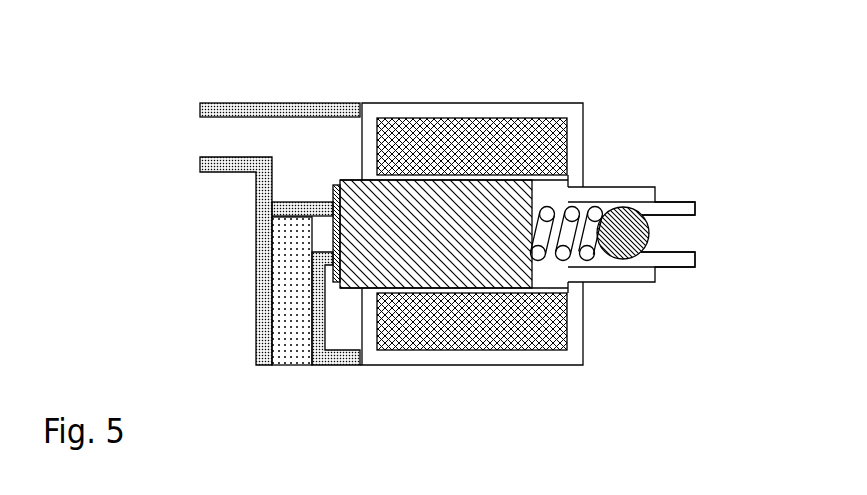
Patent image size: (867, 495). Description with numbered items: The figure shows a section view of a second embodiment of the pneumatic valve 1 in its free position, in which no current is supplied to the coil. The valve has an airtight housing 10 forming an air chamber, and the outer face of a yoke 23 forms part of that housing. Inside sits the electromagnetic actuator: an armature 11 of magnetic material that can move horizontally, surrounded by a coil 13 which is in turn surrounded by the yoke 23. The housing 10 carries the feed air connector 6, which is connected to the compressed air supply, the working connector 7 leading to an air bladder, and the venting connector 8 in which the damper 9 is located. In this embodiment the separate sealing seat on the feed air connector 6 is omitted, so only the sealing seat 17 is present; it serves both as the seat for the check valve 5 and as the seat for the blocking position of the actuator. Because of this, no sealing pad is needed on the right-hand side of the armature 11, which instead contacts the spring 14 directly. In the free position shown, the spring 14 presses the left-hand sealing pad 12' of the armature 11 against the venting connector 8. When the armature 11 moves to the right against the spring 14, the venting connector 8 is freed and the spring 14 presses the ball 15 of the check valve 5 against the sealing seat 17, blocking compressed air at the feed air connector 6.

The pneumatic valve 1 is at (605, 72).
The check valve 5 is at (597, 262).
The feed air connector 6 is at (693, 237).
The working connector 7 is at (207, 140).
The venting connector 8 is at (318, 227).
The damper 9 is at (290, 350).
The housing 10 is at (282, 100).
The armature 11 is at (355, 276).
The sealing pad 12' is at (340, 200).
The coil 13 is at (510, 128).
The spring 14 is at (597, 202).
The ball 15 is at (650, 232).
The sealing seat 17 is at (649, 205).
The yoke 23 is at (424, 108).